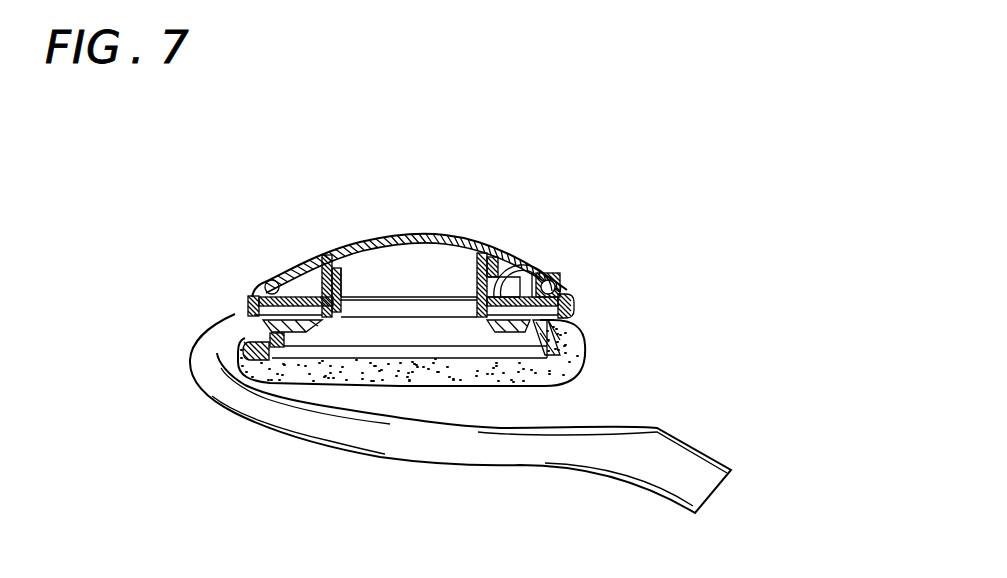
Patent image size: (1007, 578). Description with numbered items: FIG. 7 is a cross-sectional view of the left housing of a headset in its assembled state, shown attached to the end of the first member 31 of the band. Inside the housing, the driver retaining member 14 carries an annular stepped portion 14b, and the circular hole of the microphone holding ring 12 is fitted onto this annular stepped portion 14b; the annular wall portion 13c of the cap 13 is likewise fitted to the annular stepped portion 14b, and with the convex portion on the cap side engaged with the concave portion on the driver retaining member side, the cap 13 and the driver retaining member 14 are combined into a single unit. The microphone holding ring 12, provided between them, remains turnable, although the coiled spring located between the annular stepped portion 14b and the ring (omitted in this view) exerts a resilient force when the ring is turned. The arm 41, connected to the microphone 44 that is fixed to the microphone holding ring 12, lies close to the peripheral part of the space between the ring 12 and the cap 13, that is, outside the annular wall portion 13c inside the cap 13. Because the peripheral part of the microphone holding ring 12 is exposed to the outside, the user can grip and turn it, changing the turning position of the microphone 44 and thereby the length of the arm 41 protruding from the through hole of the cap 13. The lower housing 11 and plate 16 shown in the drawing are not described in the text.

The lower housing 11 is at (585, 360).
The microphone holding ring 12 is at (575, 301).
The cap 13 is at (443, 237).
The annular wall portion 13c is at (338, 250).
The driver retaining member 14 is at (583, 338).
The annular stepped portion 14b is at (478, 268).
The plate 16 is at (513, 350).
The first member 31 is at (451, 455).
The arm 41 is at (290, 266).
The microphone 44 is at (515, 262).